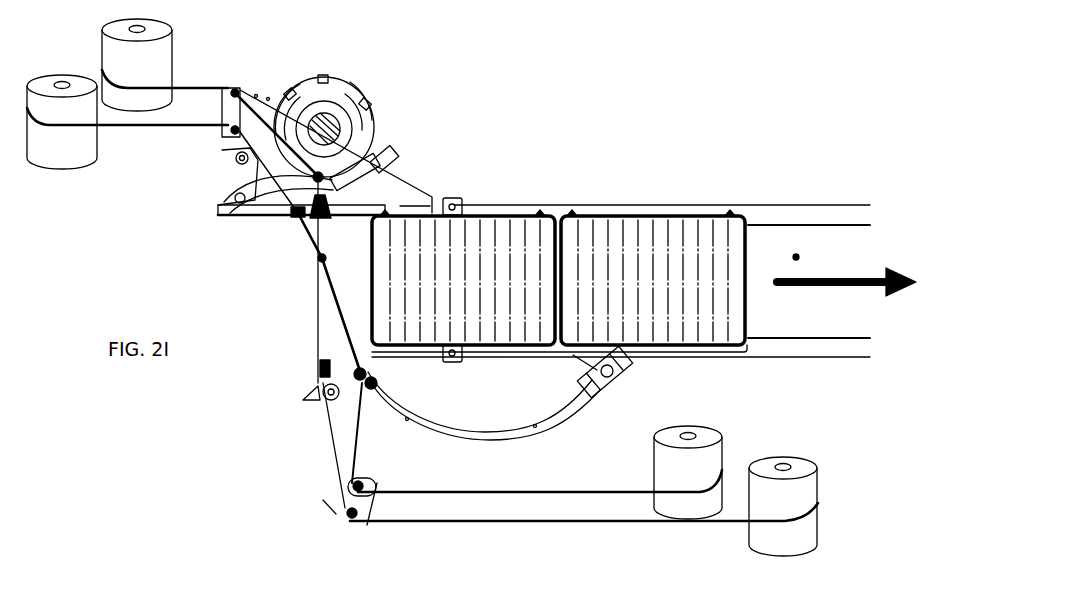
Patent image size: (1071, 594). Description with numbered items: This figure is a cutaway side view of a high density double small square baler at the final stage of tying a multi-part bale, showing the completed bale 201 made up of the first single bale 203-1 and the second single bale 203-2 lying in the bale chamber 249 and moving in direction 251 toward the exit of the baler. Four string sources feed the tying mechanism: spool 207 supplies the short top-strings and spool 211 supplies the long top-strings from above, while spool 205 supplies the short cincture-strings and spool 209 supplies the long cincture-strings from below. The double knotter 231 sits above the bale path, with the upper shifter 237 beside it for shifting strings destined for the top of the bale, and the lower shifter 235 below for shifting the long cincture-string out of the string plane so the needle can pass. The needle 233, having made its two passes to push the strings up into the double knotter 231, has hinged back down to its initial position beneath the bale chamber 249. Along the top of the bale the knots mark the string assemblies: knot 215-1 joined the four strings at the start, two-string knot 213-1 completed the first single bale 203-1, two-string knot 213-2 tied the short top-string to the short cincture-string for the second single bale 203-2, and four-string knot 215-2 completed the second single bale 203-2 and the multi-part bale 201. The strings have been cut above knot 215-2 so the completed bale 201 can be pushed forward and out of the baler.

The spool 207 is at (169, 65).
The spool 211 is at (127, 122).
The double knotter 231 is at (336, 110).
The upper shifter 237 is at (295, 230).
The lower shifter 235 is at (300, 369).
The needle 233 is at (500, 414).
The second single bale 203-2 is at (463, 314).
The first single bale 203-1 is at (653, 317).
The four-string knot 215-2 is at (427, 167).
The two-string knot 213-2 is at (568, 174).
The two-string knot 213-1 is at (602, 190).
The knot 215-1 is at (757, 187).
The multi-part bale 201 is at (621, 306).
The bale chamber 249 is at (796, 256).
The direction 251 is at (846, 303).
The spool 205 is at (540, 472).
The spool 209 is at (584, 514).